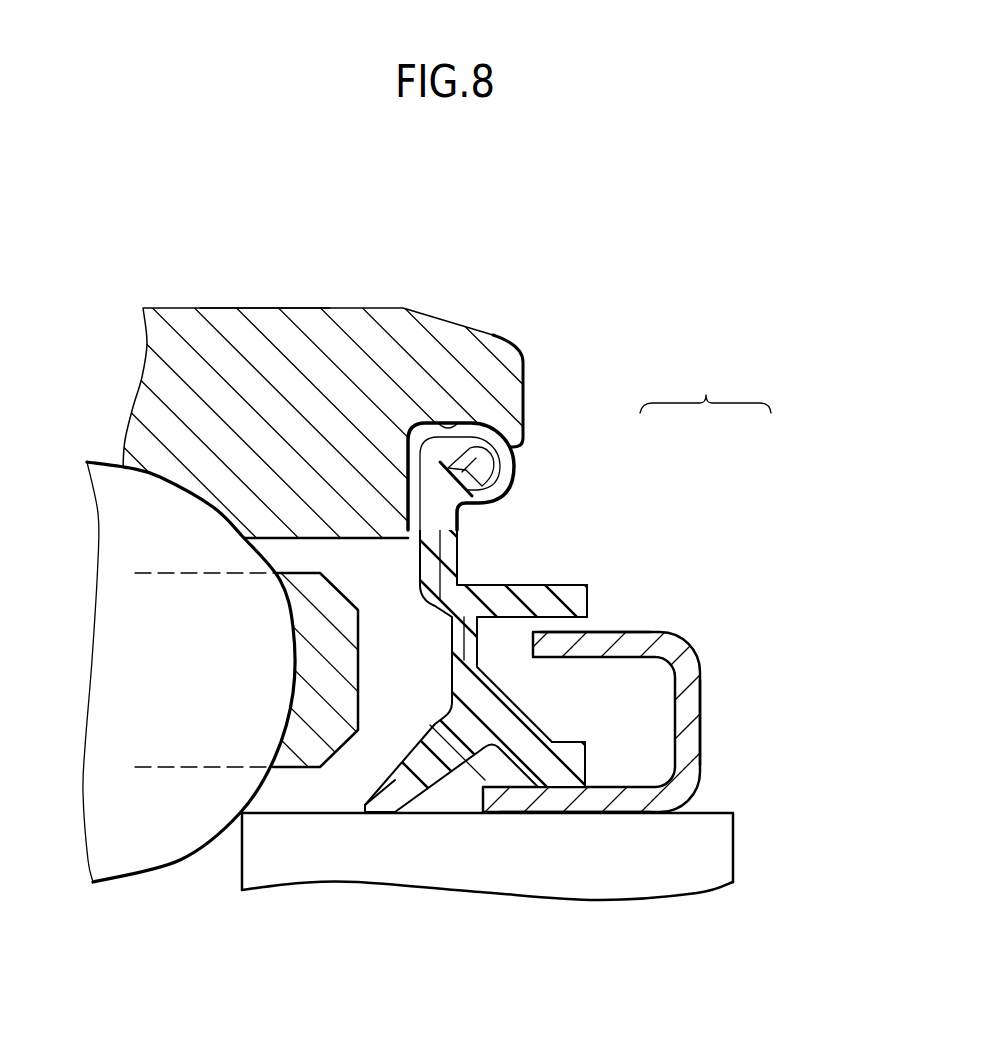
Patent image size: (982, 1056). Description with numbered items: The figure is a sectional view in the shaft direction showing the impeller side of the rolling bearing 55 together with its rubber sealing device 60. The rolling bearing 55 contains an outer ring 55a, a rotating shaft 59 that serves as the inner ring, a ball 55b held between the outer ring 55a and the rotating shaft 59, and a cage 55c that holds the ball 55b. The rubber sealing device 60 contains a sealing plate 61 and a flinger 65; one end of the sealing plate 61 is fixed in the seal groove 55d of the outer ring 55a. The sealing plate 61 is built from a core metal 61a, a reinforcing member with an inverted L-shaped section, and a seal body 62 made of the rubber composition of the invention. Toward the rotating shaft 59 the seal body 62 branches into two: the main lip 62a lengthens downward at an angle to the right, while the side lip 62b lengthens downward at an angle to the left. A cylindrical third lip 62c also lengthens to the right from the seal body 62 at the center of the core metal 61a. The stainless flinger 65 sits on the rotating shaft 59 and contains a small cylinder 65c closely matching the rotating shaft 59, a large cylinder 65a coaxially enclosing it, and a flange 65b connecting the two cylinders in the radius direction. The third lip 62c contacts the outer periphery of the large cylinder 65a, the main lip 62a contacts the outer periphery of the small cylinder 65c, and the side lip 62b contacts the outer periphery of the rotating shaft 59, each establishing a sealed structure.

The rolling bearing 55 is at (413, 252).
The outer ring 55a is at (262, 328).
The ball 55b is at (203, 850).
The cage 55c is at (330, 745).
The seal groove 55d is at (457, 427).
The rotating shaft 59 is at (713, 856).
The rubber sealing device 60 is at (705, 390).
The sealing plate 61 is at (537, 477).
The core metal 61a is at (513, 460).
The seal body 62 is at (497, 502).
The main lip 62a is at (585, 765).
The side lip 62b is at (430, 790).
The third lip 62c is at (545, 587).
The flinger 65 is at (717, 668).
The large cylinder 65a is at (593, 637).
The flange 65b is at (680, 728).
The small cylinder 65c is at (608, 792).